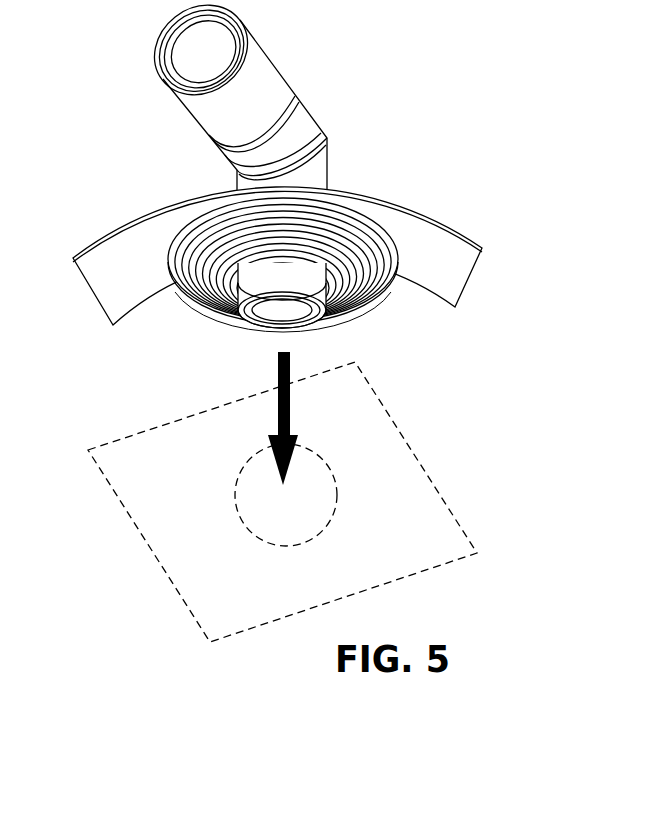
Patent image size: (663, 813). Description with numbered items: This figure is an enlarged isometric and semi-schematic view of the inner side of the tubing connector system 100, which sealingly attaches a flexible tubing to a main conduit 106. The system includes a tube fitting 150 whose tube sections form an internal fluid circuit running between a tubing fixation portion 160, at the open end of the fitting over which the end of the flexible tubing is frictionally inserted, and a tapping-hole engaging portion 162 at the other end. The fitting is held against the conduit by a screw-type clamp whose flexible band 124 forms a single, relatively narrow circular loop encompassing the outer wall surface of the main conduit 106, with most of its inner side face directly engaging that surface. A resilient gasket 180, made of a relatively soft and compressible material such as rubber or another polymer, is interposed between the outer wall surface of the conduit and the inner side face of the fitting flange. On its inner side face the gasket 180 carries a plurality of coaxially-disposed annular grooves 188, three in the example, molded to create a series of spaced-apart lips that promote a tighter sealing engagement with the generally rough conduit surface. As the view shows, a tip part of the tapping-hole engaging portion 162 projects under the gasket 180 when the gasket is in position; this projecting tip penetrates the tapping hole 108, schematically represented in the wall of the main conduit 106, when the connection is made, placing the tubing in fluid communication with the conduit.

The tubing connector system 100 is at (286, 212).
The main conduit 106 is at (347, 417).
The tapping hole 108 is at (317, 495).
The flexible band 124 is at (422, 228).
The tube fitting 150 is at (259, 212).
The tubing fixation portion 160 is at (262, 63).
The tapping-hole engaging portion 162 is at (297, 312).
The resilient gasket 180 is at (182, 300).
The annular grooves 188 is at (207, 310).